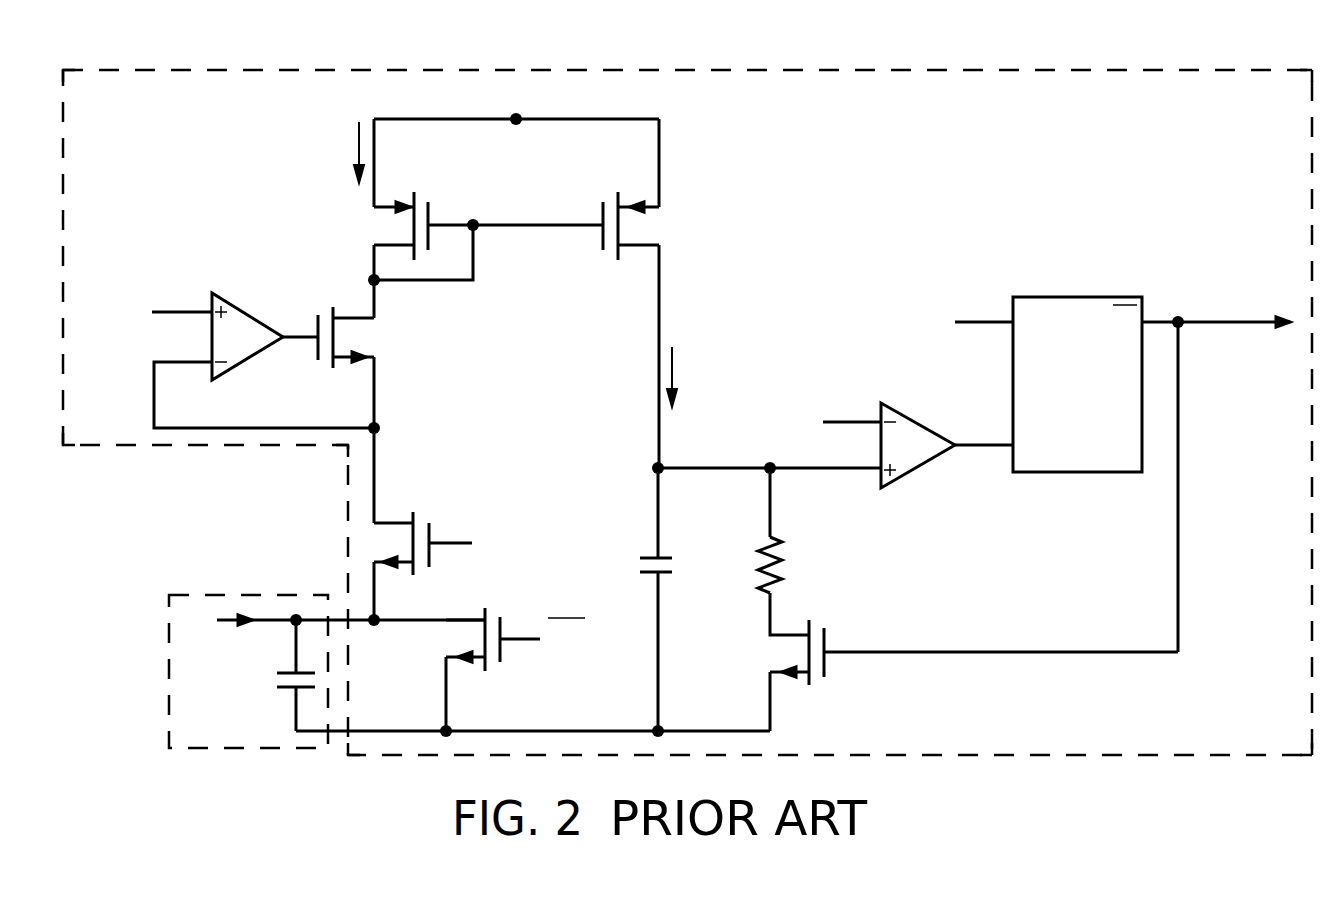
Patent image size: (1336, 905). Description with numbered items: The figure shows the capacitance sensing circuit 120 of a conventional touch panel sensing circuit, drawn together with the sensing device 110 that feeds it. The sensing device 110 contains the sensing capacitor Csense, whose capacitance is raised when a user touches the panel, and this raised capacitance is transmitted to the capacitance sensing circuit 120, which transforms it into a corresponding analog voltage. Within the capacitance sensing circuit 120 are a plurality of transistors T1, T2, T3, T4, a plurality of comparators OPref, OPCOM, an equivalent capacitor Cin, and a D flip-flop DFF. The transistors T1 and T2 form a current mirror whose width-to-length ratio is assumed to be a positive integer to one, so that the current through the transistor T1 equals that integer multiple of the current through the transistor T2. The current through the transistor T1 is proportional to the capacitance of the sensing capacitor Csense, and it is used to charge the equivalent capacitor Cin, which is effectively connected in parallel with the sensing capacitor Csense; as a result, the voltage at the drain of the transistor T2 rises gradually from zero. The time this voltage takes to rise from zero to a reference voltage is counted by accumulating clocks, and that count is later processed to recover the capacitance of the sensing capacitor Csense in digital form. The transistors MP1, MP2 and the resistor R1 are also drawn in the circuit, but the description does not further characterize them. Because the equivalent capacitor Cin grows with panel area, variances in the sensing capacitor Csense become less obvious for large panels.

The sensing device 110 is at (169, 672).
The capacitance sensing circuit 120 is at (1050, 70).
The transistor T1 is at (361, 220).
The transistor T2 is at (676, 230).
The transistor T3 is at (377, 342).
The transistor T4 is at (837, 682).
The switch transistor MP1 is at (376, 540).
The switch transistor MP2 is at (433, 646).
The resistor R1 is at (798, 567).
The equivalent capacitor Cin is at (679, 599).
The sensing capacitor Csense is at (253, 675).
The comparator OPref is at (248, 355).
The comparator OPCOM is at (915, 468).
The D flip-flop DFF is at (1078, 297).